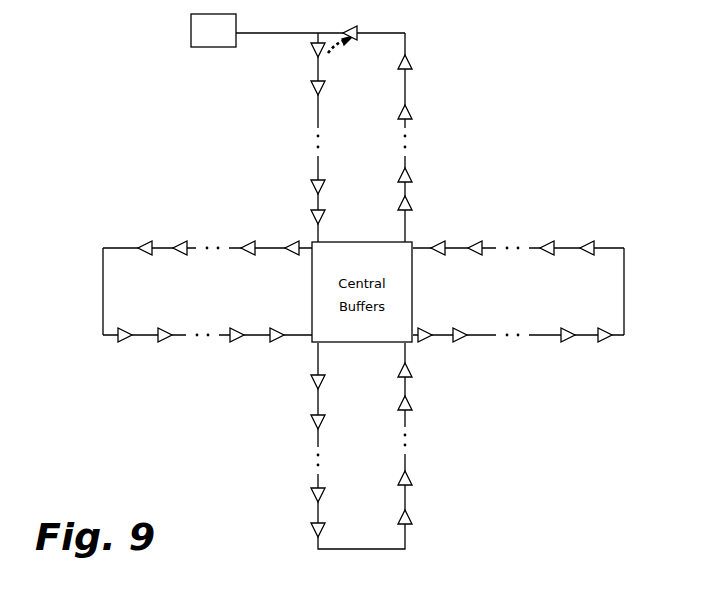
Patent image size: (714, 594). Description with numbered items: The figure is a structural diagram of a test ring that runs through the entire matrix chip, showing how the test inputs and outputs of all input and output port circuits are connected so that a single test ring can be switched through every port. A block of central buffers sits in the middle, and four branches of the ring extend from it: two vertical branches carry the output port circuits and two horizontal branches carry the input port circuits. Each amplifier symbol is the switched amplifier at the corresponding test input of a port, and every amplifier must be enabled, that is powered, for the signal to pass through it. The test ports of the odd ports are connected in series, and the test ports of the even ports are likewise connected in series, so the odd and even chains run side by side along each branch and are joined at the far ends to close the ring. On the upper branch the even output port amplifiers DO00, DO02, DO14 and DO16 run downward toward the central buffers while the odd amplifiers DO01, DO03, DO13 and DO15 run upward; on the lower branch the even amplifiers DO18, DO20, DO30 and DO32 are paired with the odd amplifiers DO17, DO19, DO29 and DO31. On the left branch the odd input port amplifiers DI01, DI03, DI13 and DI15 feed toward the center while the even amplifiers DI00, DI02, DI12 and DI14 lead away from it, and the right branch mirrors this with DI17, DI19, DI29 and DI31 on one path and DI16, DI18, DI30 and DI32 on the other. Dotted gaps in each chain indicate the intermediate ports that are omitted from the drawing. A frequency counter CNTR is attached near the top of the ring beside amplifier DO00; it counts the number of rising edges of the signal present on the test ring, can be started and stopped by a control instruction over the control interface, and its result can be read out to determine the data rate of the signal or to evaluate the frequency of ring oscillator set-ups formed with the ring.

The frequency counter CNTR is at (213, 30).
The output port test amplifier DO00 is at (321, 34).
The output port test amplifier DO01 is at (425, 62).
The output port test amplifier DO02 is at (296, 88).
The output port test amplifier DO03 is at (425, 112).
The output port test amplifier DO13 is at (425, 175).
The output port test amplifier DO14 is at (296, 187).
The output port test amplifier DO15 is at (425, 203).
The output port test amplifier DO16 is at (296, 217).
The output port test amplifier DO17 is at (425, 370).
The output port test amplifier DO18 is at (296, 382).
The output port test amplifier DO19 is at (425, 403).
The output port test amplifier DO20 is at (296, 422).
The output port test amplifier DO29 is at (425, 478).
The output port test amplifier DO30 is at (296, 495).
The output port test amplifier DO31 is at (425, 517).
The output port test amplifier DO32 is at (296, 530).
The input port test amplifier DI00 is at (127, 326).
The input port test amplifier DI01 is at (150, 258).
The input port test amplifier DI02 is at (165, 344).
The input port test amplifier DI03 is at (180, 240).
The input port test amplifier DI12 is at (240, 344).
The input port test amplifier DI13 is at (250, 240).
The input port test amplifier DI14 is at (277, 326).
The input port test amplifier DI15 is at (290, 257).
The input port test amplifier DI16 is at (428, 326).
The input port test amplifier DI17 is at (443, 258).
The input port test amplifier DI18 is at (460, 344).
The input port test amplifier DI19 is at (477, 240).
The input port test amplifier DI29 is at (548, 258).
The input port test amplifier DI30 is at (568, 344).
The input port test amplifier DI31 is at (593, 240).
The input port test amplifier DI32 is at (603, 326).